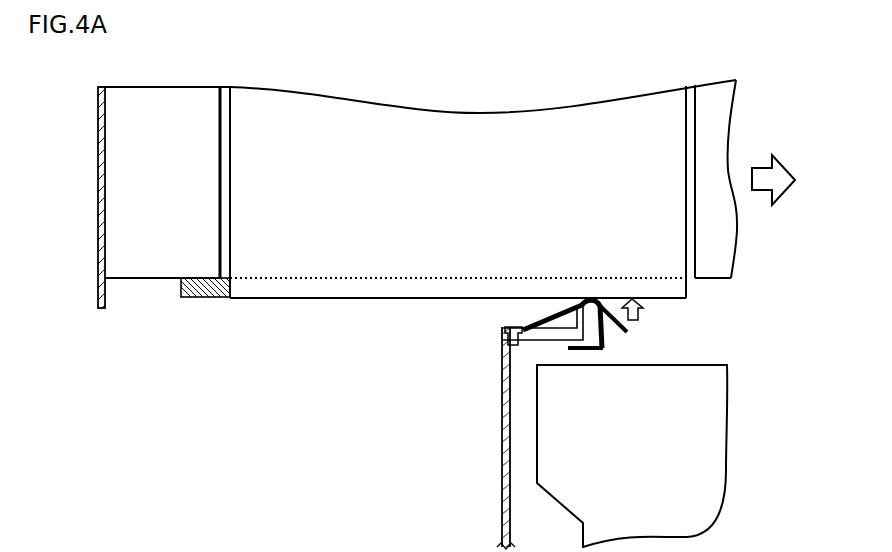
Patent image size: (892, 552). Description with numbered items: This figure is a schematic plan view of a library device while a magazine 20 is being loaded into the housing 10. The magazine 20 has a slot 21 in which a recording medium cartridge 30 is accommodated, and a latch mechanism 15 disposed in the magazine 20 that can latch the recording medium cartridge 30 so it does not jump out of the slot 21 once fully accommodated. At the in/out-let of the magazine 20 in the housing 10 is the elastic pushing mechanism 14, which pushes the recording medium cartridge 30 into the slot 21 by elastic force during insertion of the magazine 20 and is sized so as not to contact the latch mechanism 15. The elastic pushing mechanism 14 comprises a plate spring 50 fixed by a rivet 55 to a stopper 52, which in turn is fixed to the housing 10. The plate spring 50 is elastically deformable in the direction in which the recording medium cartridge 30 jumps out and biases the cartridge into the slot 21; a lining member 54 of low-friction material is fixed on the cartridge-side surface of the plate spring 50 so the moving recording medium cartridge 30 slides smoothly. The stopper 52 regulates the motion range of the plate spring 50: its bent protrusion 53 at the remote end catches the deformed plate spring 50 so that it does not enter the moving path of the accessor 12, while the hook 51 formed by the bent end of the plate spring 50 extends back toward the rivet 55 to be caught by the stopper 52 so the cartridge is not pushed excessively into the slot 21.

The housing 10 is at (502, 477).
The accessor 12 is at (710, 445).
The elastic pushing mechanism 14 is at (655, 320).
The latch mechanism 15 is at (200, 290).
The magazine 20 is at (146, 102).
The slot 21 is at (223, 105).
The recording medium cartridge 30 is at (452, 146).
The plate spring 50 is at (606, 345).
The hook 51 is at (570, 348).
The stopper 52 is at (542, 335).
The protrusion 53 is at (560, 303).
The lining member 54 is at (628, 330).
The rivet 55 is at (512, 324).